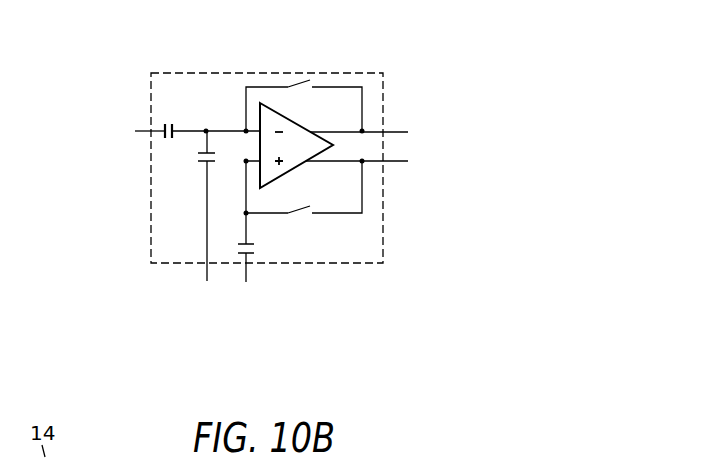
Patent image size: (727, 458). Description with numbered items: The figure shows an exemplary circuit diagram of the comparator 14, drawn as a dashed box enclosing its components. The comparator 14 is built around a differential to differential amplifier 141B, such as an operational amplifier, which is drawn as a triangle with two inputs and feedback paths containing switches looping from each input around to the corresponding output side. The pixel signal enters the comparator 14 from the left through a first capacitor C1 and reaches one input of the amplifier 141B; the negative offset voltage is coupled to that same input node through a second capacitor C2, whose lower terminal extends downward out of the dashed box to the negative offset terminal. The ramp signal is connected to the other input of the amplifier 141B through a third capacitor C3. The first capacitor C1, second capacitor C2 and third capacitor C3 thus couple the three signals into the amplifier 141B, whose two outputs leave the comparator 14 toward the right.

The comparator 14 is at (230, 72).
The differential to differential amplifier 141B is at (281, 177).
The first capacitor C1 is at (168, 119).
The second capacitor C2 is at (193, 206).
The third capacitor C3 is at (260, 247).